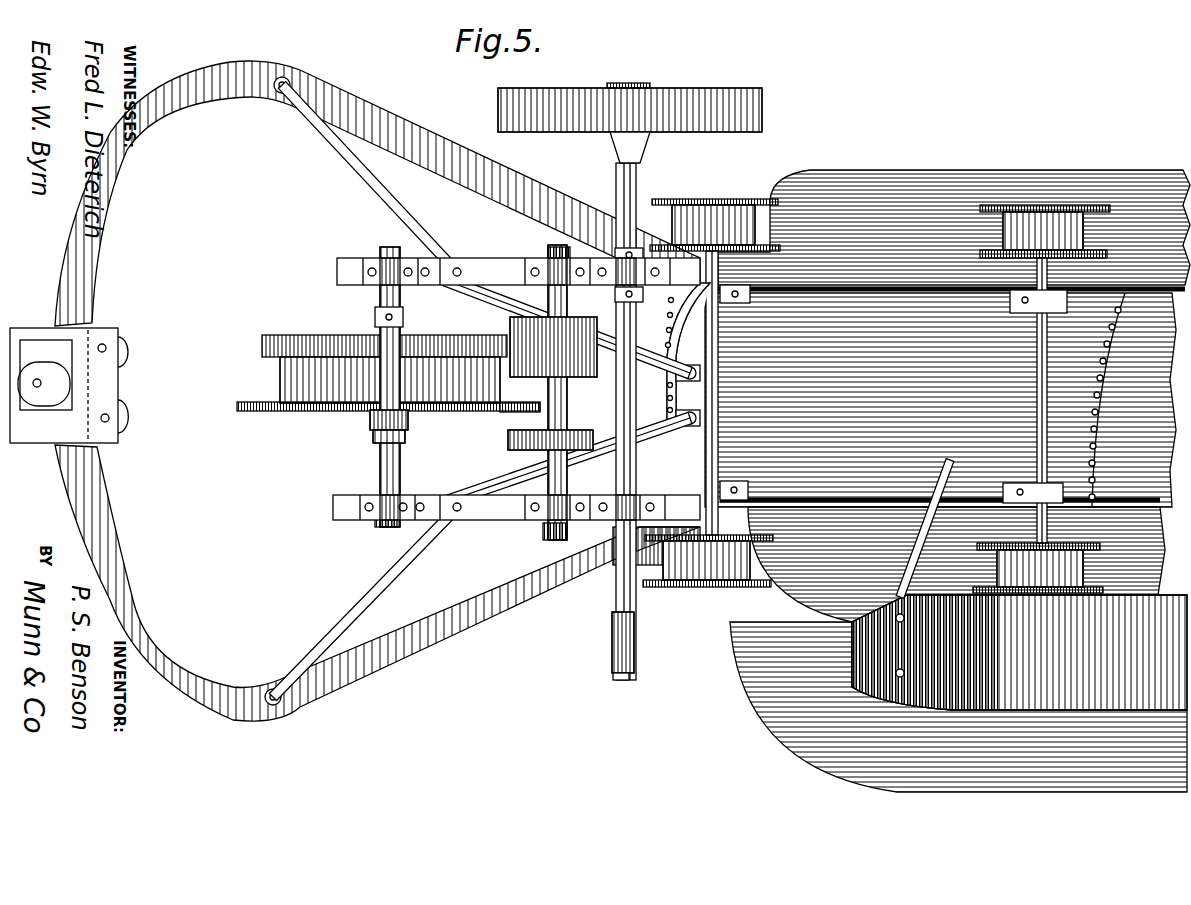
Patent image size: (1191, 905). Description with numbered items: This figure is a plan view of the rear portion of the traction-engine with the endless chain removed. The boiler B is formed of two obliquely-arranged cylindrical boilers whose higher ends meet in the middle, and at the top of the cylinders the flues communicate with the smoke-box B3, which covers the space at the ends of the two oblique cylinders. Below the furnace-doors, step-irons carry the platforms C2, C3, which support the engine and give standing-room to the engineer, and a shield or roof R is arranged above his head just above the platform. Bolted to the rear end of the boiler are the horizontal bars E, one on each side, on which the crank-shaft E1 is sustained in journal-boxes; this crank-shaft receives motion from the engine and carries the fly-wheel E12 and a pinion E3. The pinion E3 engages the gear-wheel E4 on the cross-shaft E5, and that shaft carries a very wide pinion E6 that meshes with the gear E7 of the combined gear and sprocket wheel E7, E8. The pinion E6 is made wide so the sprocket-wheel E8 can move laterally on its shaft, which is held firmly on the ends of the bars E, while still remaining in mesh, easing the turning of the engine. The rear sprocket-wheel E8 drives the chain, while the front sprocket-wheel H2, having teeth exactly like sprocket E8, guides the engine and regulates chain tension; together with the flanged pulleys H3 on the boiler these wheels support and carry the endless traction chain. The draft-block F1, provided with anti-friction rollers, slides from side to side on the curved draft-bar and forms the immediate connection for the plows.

The horizontal bars E is at (516, 378).
The crank-shaft E1 is at (620, 636).
The driving wheel E12 is at (630, 123).
The pinion E3 is at (675, 382).
The gear-wheel E4 is at (531, 440).
The cross-shaft E5 is at (547, 401).
The wide pinion E6 is at (563, 346).
The gear of combined gear and sprocket wheel E7 is at (384, 358).
The sprocket-wheel E8 is at (388, 396).
The draft-block F1 is at (355, 391).
The flanged pulleys H3 is at (711, 392).
The front sprocket-wheel H2 is at (1041, 399).
The boiler B is at (947, 338).
The smoke-box B3 is at (1123, 400).
The platform C2 is at (956, 564).
The platform C3 is at (958, 707).
The shield or roof R is at (1019, 652).